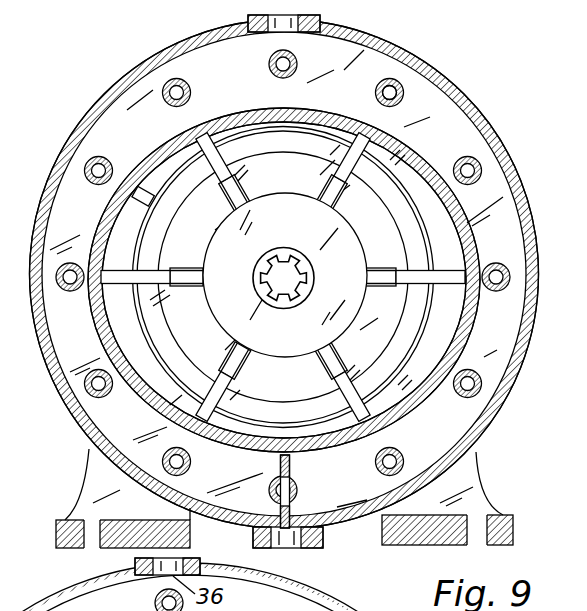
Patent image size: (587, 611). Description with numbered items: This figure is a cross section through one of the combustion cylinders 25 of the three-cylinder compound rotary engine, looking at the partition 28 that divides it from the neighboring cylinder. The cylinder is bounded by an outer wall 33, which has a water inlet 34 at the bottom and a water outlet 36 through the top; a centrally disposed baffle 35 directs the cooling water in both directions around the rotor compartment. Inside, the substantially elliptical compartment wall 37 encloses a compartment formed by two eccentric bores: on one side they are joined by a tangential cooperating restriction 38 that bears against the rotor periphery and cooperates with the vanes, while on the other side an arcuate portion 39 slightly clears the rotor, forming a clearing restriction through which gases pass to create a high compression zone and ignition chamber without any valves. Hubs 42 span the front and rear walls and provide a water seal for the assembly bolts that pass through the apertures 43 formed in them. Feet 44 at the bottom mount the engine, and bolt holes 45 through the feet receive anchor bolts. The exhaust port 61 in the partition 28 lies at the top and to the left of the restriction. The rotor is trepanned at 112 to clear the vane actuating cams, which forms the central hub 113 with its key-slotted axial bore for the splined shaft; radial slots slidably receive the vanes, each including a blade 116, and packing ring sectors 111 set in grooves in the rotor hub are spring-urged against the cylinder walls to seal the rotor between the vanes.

The combustion cylinder 25 is at (56, 161).
The partition 28 is at (101, 330).
The outer wall 33 is at (532, 236).
The water inlet 34 is at (297, 546).
The baffle 35 is at (292, 467).
The water outlet 36 is at (272, 32).
The compartment wall 37 is at (465, 320).
The cooperating restriction 38 is at (286, 121).
The arcuate portion 39 is at (270, 446).
The hub 42 is at (398, 90).
The aperture 43 is at (401, 76).
The foot 44 is at (56, 531).
The bolt hole 45 is at (85, 548).
The exhaust port 61 is at (160, 180).
The packing ring sector 111 is at (164, 333).
The trepanned portion 112 is at (310, 343).
The hub 113 is at (289, 307).
The blade 116 is at (192, 281).